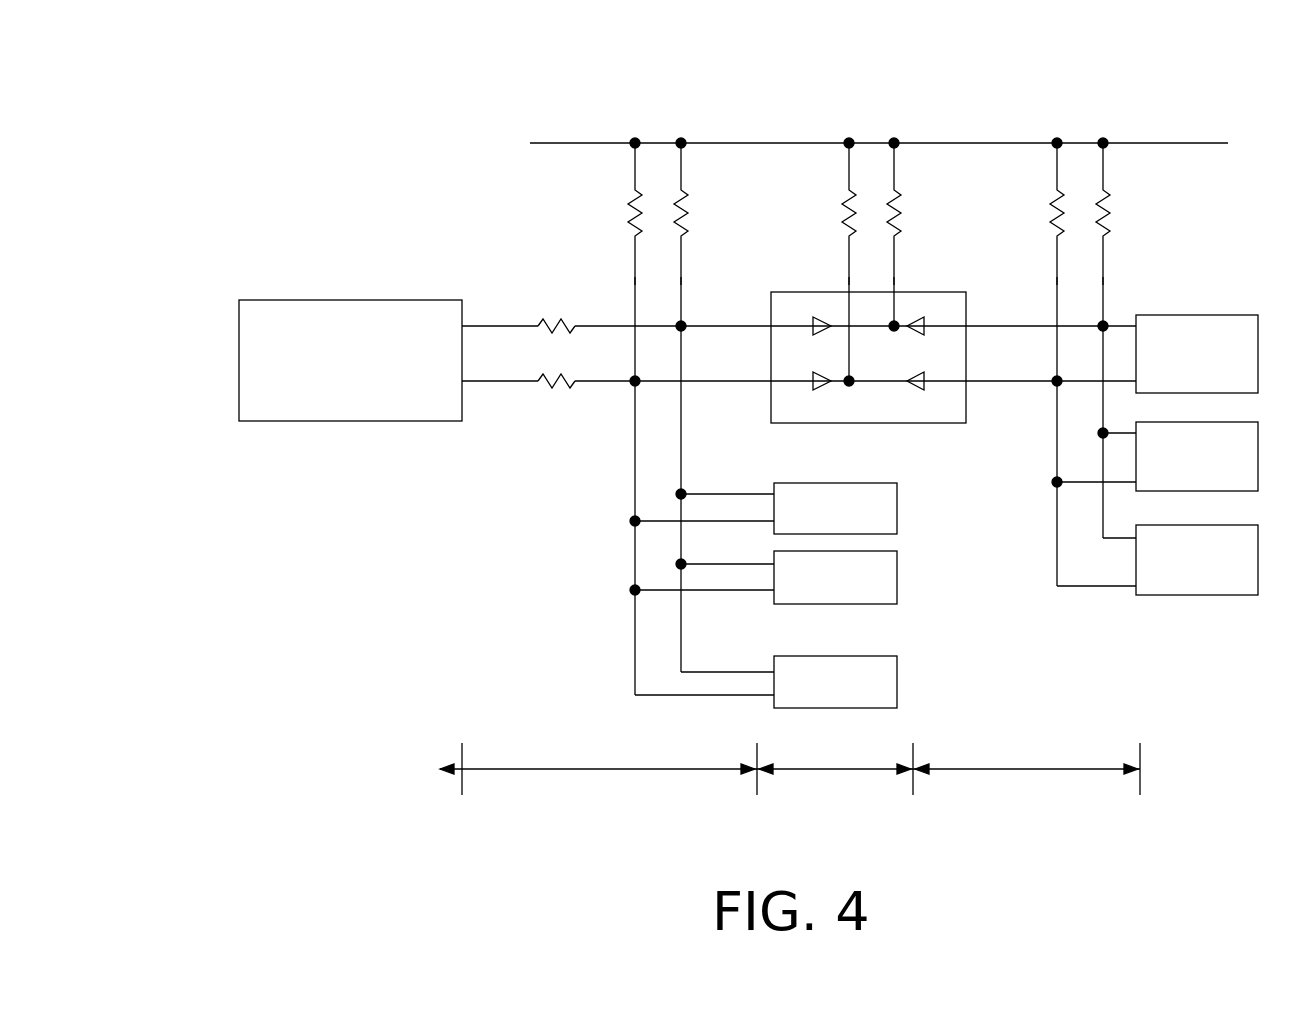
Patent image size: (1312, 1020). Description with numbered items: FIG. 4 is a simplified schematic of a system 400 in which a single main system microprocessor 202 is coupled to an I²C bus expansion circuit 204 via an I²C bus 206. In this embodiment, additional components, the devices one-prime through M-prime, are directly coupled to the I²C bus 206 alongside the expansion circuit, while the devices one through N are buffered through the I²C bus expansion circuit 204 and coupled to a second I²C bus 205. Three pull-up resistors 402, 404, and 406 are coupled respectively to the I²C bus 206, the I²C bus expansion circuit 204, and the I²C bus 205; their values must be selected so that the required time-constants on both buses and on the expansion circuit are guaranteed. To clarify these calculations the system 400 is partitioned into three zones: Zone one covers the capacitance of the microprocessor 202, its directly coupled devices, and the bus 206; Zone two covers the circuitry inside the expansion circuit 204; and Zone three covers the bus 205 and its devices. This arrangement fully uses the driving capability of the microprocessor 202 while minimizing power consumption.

The system 400 is at (717, 419).
The pull-up resistor 402 is at (698, 135).
The pull-up resistor 404 is at (911, 135).
The pull-up resistor 406 is at (1116, 135).
The single main system microprocessor 202 is at (350, 360).
The I²C bus expansion circuit 204 is at (868, 357).
The I²C bus 205 is at (1055, 593).
The I²C bus 206 is at (475, 434).